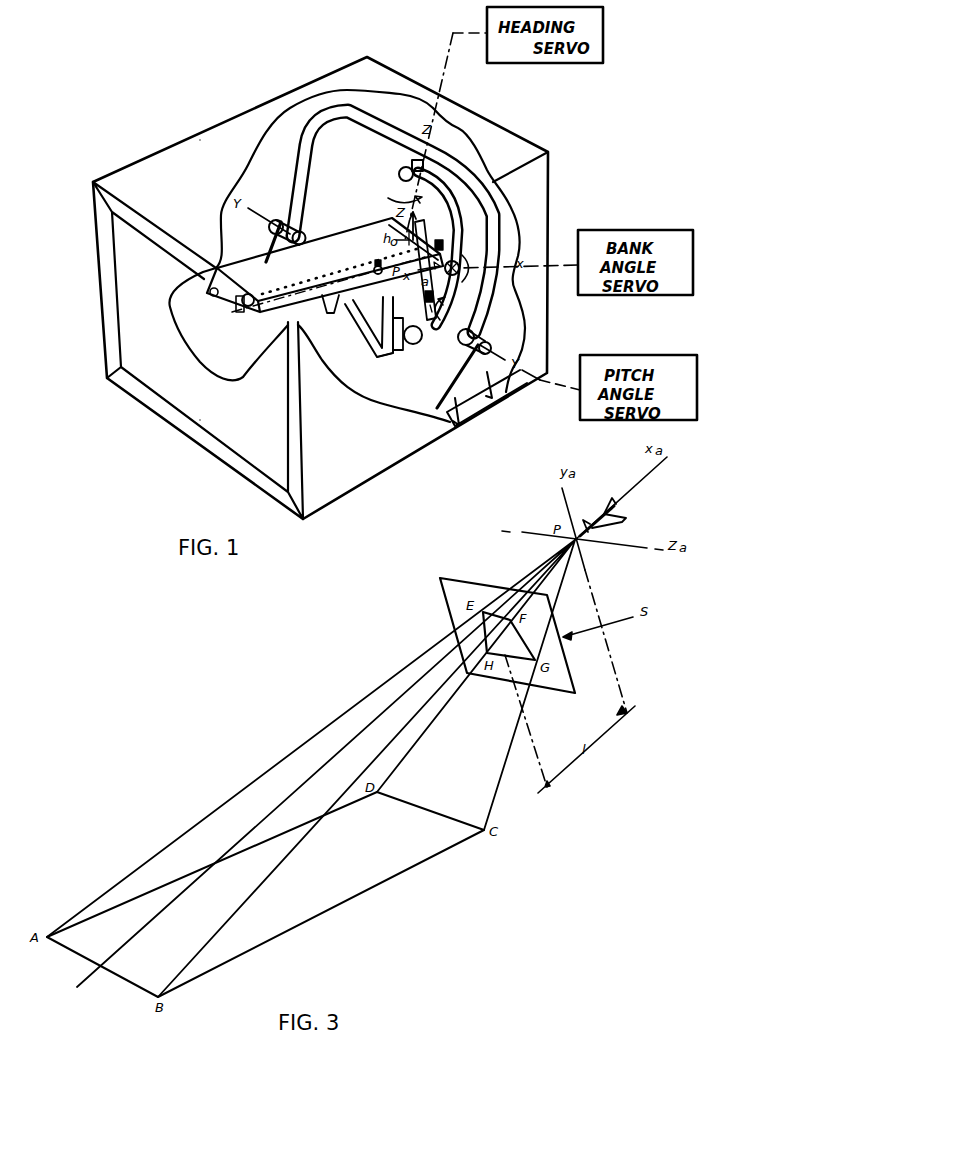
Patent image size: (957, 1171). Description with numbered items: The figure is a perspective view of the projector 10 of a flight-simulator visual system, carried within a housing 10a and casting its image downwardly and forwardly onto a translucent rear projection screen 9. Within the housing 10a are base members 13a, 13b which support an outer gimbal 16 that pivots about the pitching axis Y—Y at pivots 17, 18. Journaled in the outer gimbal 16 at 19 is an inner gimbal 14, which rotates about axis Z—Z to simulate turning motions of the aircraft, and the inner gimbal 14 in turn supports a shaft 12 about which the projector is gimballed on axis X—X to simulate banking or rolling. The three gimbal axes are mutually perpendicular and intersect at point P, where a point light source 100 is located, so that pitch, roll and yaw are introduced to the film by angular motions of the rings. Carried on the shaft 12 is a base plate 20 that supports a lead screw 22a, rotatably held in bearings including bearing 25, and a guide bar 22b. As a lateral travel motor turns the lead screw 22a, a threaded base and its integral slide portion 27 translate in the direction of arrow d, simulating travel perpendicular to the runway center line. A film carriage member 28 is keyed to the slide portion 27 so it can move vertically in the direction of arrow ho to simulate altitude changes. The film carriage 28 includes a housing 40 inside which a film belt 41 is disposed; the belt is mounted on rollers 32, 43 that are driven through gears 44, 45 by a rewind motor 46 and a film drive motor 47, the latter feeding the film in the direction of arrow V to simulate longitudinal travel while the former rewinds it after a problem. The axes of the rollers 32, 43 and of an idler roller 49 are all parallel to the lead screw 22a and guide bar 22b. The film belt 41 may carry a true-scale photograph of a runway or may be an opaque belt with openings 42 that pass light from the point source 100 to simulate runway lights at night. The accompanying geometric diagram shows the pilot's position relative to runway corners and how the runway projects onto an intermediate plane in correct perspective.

The projector 10 is at (240, 112).
The housing 10a is at (174, 188).
The rear projection screen 9 is at (213, 404).
The outer gimbal 16 is at (378, 128).
The inner gimbal 14 is at (446, 200).
The shaft 12 is at (452, 265).
The pivot 17 is at (283, 217).
The pivot 18 is at (483, 342).
The journal 19 is at (408, 163).
The base member 13a is at (272, 241).
The base member 13b is at (486, 387).
The slide portion 27 is at (414, 230).
The film carriage member 28 is at (387, 222).
The housing 40 is at (262, 283).
The film belt 41 is at (327, 285).
The openings 42 is at (334, 312).
The roller 43 is at (376, 356).
The gear 44 is at (240, 312).
The gear 45 is at (396, 350).
The rewind motor 46 is at (250, 306).
The film drive motor 47 is at (413, 346).
The roller 32 is at (218, 300).
The point light source 100 is at (378, 266).
The base plate 20 is at (426, 297).
The lead screw 22a is at (441, 246).
The guide bar 22b is at (436, 326).
The bearing 25 is at (444, 264).
The idler roller 49 is at (415, 313).